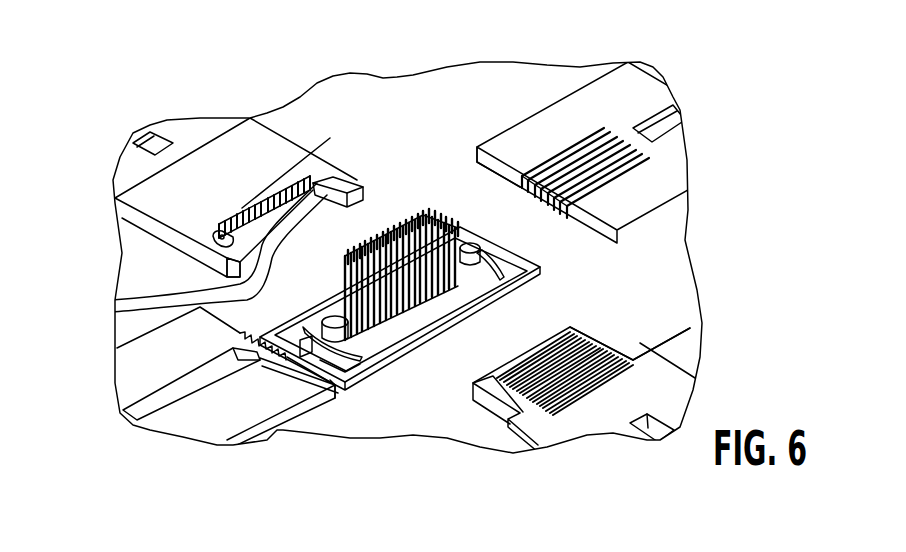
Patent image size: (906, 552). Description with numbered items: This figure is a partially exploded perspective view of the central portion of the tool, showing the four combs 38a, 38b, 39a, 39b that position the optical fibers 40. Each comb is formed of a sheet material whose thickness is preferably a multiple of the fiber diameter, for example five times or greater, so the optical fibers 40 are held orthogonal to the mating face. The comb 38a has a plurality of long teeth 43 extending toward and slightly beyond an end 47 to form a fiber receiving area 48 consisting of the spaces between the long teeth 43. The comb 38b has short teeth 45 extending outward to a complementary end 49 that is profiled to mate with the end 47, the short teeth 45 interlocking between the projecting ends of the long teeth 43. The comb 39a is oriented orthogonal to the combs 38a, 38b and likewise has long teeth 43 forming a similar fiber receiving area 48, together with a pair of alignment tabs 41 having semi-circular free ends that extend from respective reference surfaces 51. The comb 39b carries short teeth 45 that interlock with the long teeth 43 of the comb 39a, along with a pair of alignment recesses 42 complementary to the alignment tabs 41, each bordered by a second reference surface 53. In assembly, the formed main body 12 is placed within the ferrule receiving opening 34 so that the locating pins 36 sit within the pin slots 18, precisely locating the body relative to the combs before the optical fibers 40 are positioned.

The main body 12 is at (427, 330).
The pin slots 18 is at (292, 328).
The ferrule receiving opening 34 is at (490, 247).
The locating pins 36 is at (458, 248).
The comb 38a is at (572, 88).
The comb 38b is at (263, 410).
The comb 39a is at (676, 362).
The comb 39b is at (268, 126).
The optical fibers 40 is at (405, 217).
The alignment tabs 41 is at (570, 327).
The alignment recesses 42 is at (331, 176).
The long teeth 43 is at (573, 222).
The short teeth 45 is at (113, 312).
The end 47 is at (500, 168).
The fiber receiving area 48 is at (655, 162).
The complementary end 49 is at (333, 388).
The reference surface 51 is at (641, 343).
The second reference surface 53 is at (230, 278).